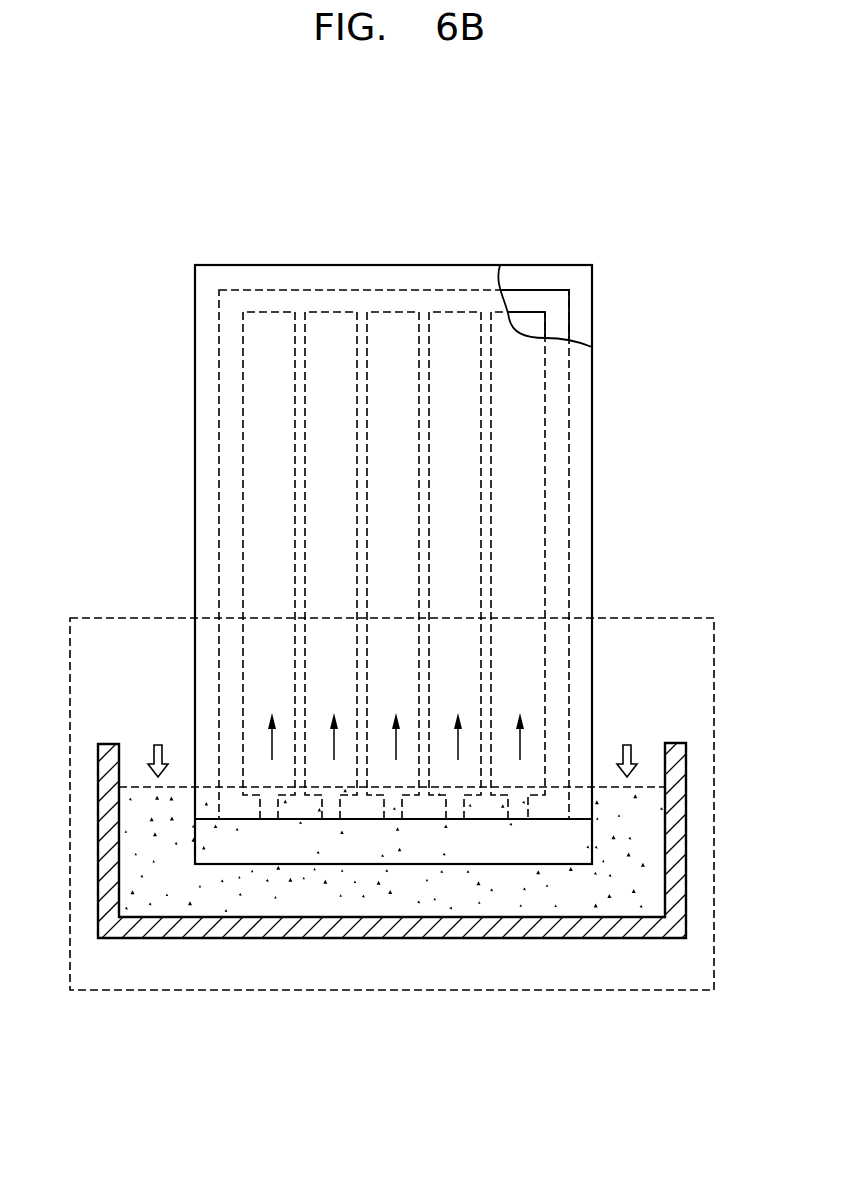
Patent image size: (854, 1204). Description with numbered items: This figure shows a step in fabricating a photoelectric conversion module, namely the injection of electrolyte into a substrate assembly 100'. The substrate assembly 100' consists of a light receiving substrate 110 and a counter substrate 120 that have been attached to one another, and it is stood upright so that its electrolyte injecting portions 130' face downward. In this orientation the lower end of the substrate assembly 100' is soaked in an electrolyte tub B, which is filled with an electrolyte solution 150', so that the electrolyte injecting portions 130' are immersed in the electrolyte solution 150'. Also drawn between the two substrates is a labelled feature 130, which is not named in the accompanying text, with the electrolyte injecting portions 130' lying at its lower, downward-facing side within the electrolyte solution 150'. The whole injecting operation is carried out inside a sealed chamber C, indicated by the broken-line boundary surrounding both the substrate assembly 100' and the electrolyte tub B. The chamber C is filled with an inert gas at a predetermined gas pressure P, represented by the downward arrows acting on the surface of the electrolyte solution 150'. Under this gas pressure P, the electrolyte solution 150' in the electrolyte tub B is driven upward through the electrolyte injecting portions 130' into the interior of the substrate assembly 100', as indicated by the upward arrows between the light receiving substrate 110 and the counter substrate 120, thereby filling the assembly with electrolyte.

The substrate assembly 100' is at (434, 610).
The light receiving substrate 110 is at (443, 275).
The counter substrate 120 is at (588, 298).
The electrode pattern 130 is at (417, 515).
The electrolyte injecting portions 130' is at (393, 933).
The electrolyte solution 150' is at (449, 849).
The electrolyte tub B is at (676, 881).
The sealed chamber C is at (662, 618).
The gas pressure P is at (392, 745).